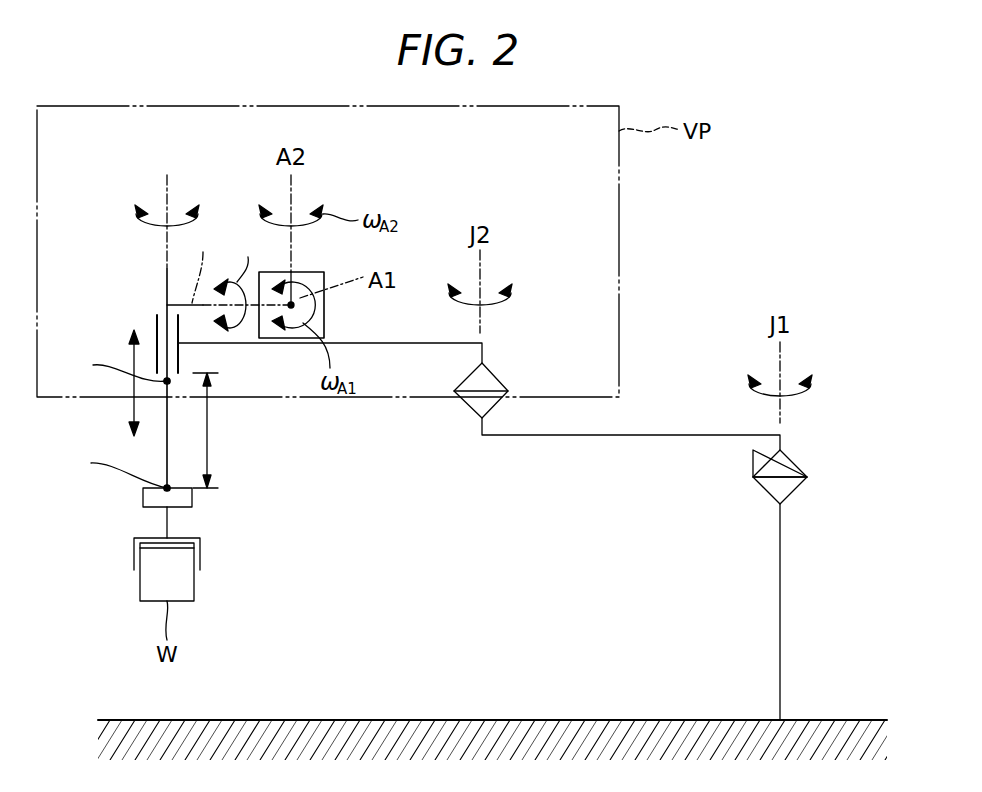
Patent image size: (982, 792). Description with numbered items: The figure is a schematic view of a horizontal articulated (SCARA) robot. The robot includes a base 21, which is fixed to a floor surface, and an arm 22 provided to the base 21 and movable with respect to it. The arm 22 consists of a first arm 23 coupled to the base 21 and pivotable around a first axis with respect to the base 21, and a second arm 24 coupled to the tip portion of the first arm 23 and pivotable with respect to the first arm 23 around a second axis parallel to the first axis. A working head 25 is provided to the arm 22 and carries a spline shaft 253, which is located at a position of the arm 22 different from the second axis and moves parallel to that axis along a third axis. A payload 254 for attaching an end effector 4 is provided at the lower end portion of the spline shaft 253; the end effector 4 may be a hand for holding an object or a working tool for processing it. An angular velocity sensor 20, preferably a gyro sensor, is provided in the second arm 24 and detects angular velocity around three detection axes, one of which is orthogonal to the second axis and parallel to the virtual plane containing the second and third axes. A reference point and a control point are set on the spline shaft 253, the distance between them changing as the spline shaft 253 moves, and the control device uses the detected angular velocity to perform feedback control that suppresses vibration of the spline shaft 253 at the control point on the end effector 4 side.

The end effector 4 is at (134, 560).
The angular velocity sensor 20 is at (324, 313).
The base 21 is at (780, 585).
The arm 22 is at (479, 445).
The first arm 23 is at (565, 435).
The second arm 24 is at (343, 423).
The working head 25 is at (168, 327).
The spline shaft 253 is at (167, 455).
The payload 254 is at (143, 499).